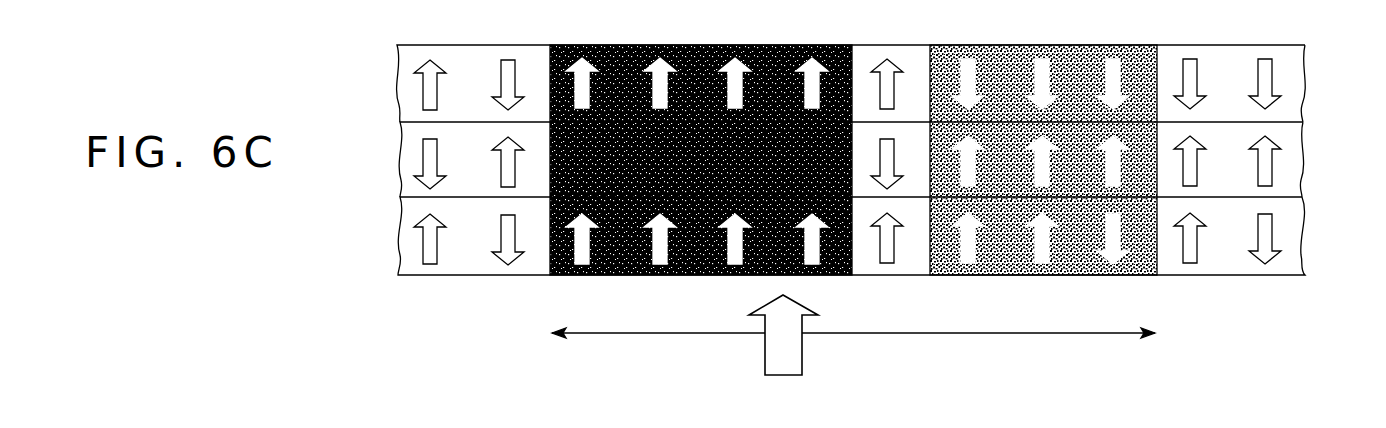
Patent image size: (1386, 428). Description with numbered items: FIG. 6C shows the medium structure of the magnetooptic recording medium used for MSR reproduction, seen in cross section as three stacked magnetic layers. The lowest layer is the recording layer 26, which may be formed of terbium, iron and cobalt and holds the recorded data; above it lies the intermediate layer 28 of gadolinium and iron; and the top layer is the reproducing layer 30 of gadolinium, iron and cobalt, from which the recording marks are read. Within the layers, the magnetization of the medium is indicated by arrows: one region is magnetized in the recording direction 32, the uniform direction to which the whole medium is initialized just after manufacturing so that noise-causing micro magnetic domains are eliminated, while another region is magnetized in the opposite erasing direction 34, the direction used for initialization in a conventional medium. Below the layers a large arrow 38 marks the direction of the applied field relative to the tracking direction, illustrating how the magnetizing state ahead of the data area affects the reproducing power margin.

The recording layer 26 is at (1290, 256).
The intermediate layer 28 is at (1288, 173).
The reproducing layer 30 is at (1291, 91).
The recording direction 32 is at (580, 70).
The erasing direction 34 is at (1109, 68).
The applied field direction 38 is at (805, 416).